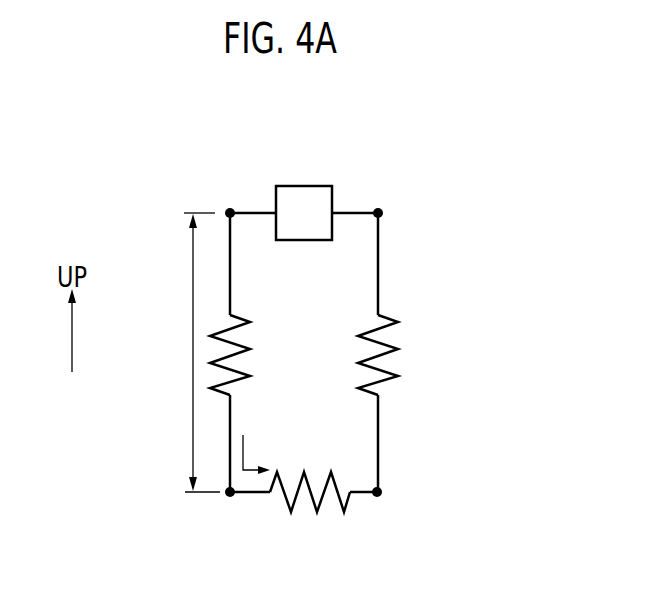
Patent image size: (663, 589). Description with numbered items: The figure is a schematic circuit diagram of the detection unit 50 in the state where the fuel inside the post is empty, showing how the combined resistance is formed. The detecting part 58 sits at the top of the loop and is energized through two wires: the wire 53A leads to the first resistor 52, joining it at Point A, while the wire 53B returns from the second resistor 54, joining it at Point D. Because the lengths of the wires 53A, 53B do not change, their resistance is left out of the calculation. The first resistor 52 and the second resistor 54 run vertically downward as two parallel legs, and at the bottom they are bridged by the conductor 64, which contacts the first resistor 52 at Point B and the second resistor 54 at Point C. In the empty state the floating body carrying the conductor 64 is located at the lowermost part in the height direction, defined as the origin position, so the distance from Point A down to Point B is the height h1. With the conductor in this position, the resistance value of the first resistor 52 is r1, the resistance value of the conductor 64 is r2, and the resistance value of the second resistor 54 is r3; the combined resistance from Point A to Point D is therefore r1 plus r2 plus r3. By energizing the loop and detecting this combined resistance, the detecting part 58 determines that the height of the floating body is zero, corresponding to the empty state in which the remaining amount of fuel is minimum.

The detection unit 50 is at (355, 338).
The first resistor 52 is at (248, 352).
The wire 53A is at (256, 212).
The wire 53B is at (353, 212).
The second resistor 54 is at (396, 352).
The detecting part 58 is at (304, 185).
The conductor 64 is at (304, 524).
The Point A is at (228, 210).
The Point B is at (228, 497).
The Point C is at (380, 497).
The Point D is at (380, 210).
The height h1 is at (192, 350).
The resistance value r1 is at (243, 355).
The resistance value r2 is at (255, 496).
The resistance value r3 is at (392, 355).